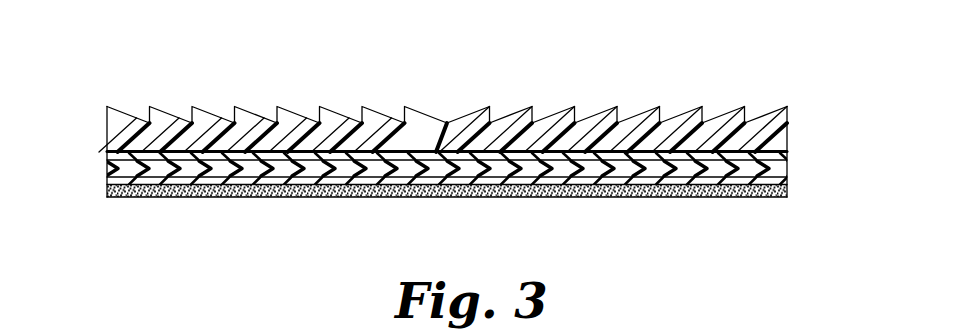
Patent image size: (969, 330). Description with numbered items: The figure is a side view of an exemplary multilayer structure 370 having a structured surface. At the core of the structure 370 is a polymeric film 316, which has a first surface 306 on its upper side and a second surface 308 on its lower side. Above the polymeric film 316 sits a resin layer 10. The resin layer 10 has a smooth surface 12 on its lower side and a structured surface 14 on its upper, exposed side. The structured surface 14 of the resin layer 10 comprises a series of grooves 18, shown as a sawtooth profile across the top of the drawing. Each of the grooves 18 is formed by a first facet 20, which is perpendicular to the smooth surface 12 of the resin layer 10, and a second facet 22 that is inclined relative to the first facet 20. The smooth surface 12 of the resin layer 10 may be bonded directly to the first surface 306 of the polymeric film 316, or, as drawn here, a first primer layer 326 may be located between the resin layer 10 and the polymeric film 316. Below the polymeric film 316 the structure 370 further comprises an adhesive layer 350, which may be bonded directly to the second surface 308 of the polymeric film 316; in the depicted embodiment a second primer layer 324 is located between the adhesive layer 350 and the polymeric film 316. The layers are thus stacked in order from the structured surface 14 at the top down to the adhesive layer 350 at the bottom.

The resin layer 10 is at (118, 121).
The smooth surface 12 is at (291, 160).
The structured surface 14 is at (621, 116).
The grooves 18 is at (403, 124).
The first facet 20 is at (535, 126).
The second facet 22 is at (515, 120).
The first surface 306 is at (109, 152).
The second surface 308 is at (138, 181).
The polymeric film 316 is at (788, 168).
The second primer layer 324 is at (788, 180).
The first primer layer 326 is at (787, 153).
The adhesive layer 350 is at (598, 197).
The structure 370 is at (718, 59).